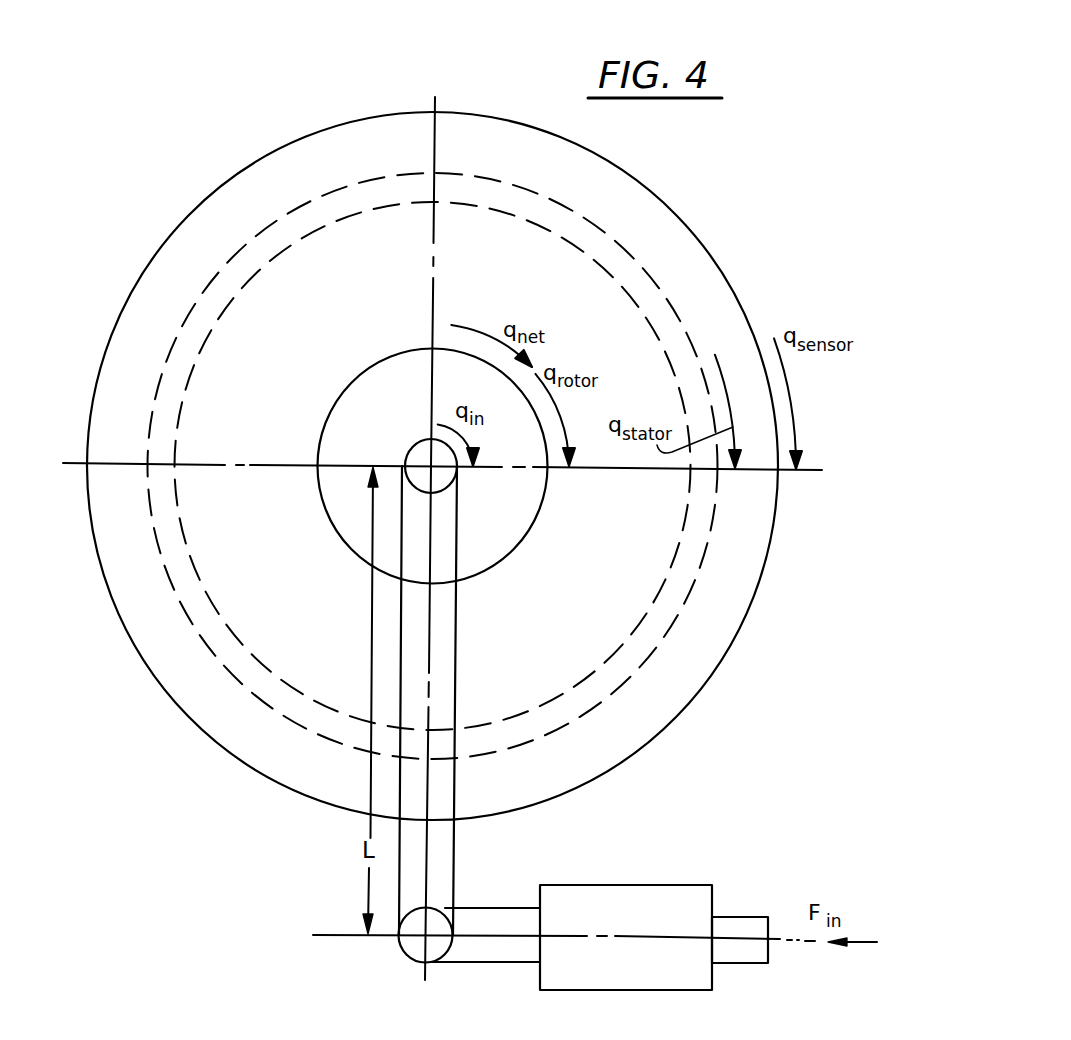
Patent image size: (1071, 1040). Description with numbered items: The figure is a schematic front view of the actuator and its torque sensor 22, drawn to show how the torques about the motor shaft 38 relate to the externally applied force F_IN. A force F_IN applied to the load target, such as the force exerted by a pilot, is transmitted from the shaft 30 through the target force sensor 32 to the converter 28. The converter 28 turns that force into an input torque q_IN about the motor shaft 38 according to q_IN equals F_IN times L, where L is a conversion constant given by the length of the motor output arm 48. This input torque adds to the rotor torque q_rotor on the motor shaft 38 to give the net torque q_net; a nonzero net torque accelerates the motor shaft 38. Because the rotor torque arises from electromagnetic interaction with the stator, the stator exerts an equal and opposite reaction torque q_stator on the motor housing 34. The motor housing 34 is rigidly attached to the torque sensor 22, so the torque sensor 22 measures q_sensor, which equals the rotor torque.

The torque sensor 22 is at (187, 205).
The motor housing 34 is at (168, 328).
The motor shaft 38 is at (408, 452).
The converter 28 is at (475, 714).
The motor output arm 48 is at (443, 657).
The target force sensor 32 is at (638, 898).
The shaft 30 is at (733, 914).